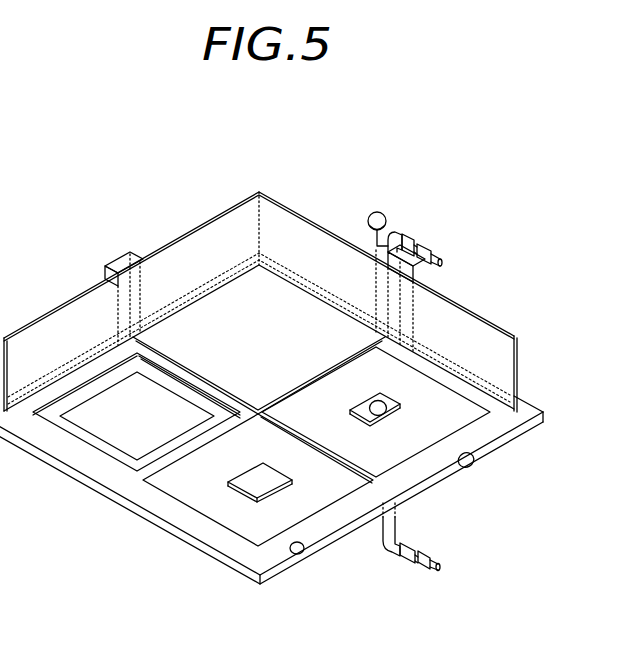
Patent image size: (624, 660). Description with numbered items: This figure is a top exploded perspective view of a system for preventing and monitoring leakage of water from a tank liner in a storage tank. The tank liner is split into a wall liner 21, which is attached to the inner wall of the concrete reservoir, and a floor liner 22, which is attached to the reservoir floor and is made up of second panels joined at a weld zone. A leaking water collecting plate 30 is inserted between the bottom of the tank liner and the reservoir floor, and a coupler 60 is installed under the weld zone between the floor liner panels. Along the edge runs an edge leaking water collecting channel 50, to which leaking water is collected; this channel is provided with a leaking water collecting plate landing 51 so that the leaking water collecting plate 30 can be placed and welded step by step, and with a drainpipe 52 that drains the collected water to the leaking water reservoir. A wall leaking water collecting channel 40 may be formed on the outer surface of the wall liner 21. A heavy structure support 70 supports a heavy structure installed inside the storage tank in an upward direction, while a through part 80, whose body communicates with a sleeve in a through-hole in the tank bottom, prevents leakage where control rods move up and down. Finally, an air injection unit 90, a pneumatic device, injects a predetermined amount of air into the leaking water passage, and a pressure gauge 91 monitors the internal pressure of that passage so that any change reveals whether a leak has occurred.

The wall liner 21 is at (43, 314).
The floor liner 22 is at (207, 327).
The leaking water collecting plate 30 is at (405, 383).
The wall leaking water collecting channel 40 is at (124, 257).
The edge leaking water collecting channel 50 is at (190, 528).
The leaking water collecting plate landing 51 is at (136, 412).
The drainpipe 52 is at (420, 548).
The coupler 60 is at (185, 383).
The heavy structure support 70 is at (266, 500).
The through part 80 is at (423, 428).
The air injection unit 90 is at (469, 234).
The pressure gauge 91 is at (378, 211).